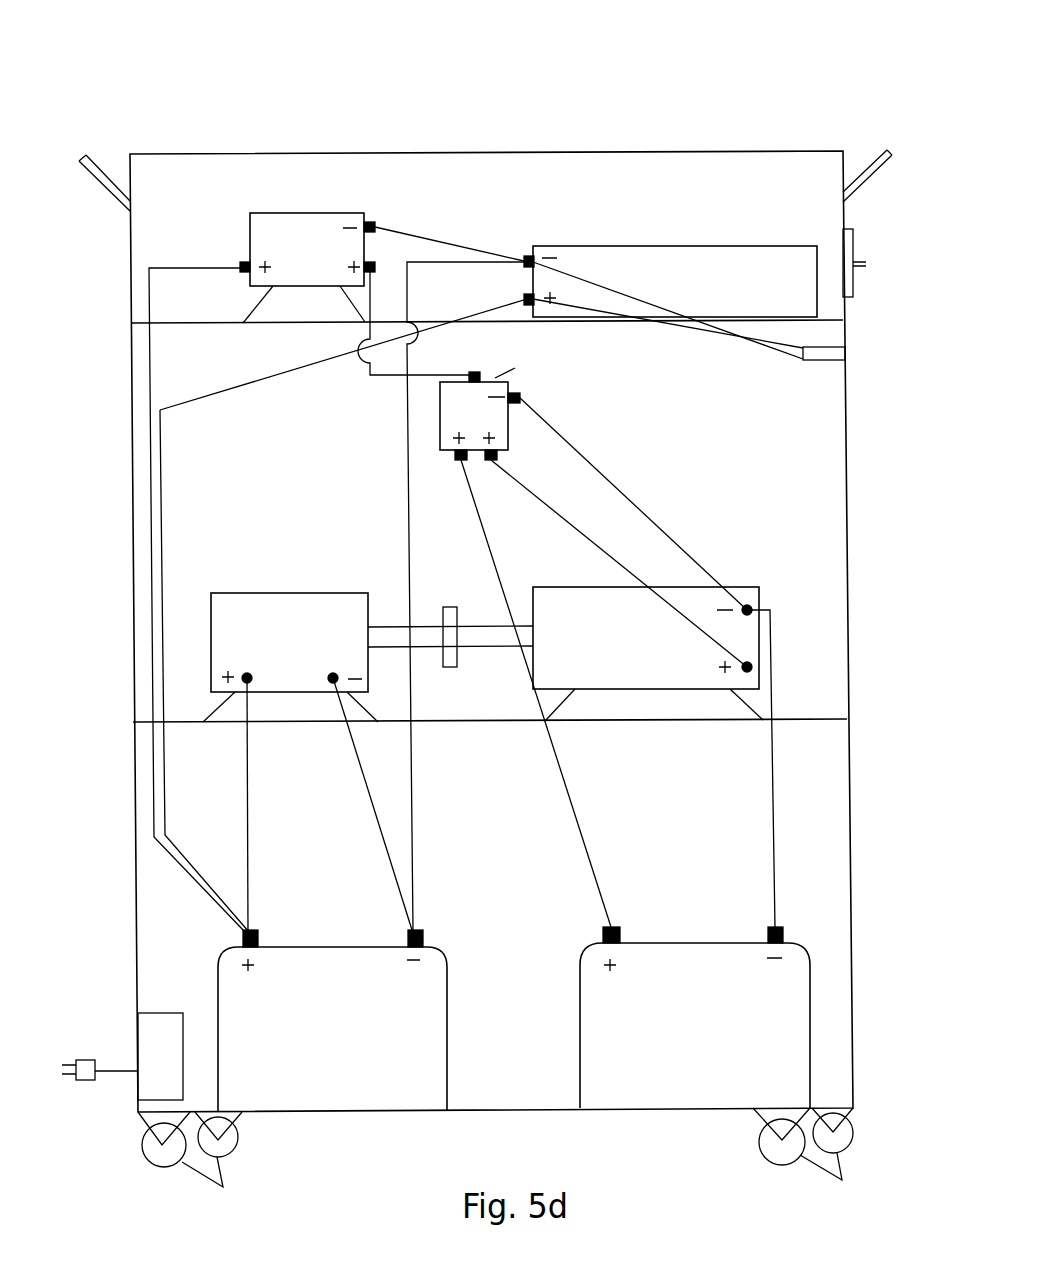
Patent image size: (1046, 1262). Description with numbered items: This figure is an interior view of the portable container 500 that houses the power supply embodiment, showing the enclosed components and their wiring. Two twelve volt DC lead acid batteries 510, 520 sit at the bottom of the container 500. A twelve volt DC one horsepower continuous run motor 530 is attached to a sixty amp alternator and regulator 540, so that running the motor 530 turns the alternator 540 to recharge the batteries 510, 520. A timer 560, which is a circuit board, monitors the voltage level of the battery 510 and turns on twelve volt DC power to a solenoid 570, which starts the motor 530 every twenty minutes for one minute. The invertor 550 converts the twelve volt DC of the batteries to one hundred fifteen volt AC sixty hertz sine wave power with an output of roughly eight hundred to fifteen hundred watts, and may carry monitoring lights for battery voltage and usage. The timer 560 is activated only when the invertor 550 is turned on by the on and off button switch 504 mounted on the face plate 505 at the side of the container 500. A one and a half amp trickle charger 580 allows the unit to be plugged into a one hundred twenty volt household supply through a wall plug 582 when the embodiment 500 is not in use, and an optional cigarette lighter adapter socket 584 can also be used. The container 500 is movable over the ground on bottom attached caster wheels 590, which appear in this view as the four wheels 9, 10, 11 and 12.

The container 500 is at (283, 72).
The face plate 505 is at (853, 240).
The on and off button switch 504 is at (866, 265).
The invertor 550 is at (670, 281).
The timer 560 is at (307, 268).
The solenoid 570 is at (532, 404).
The cigarette lighter adapter socket 584 is at (823, 360).
The alternator and regulator 540 is at (290, 657).
The motor 530 is at (648, 654).
The battery 510 is at (332, 1021).
The battery 520 is at (695, 1017).
The trickle charger 580 is at (153, 1053).
The wall plug 582 is at (85, 1080).
The wheel 9 is at (157, 1153).
The wheel 10 is at (775, 1148).
The wheel 11 is at (845, 1133).
The wheel 12 is at (227, 1140).
The caster wheels 590 is at (535, 1183).